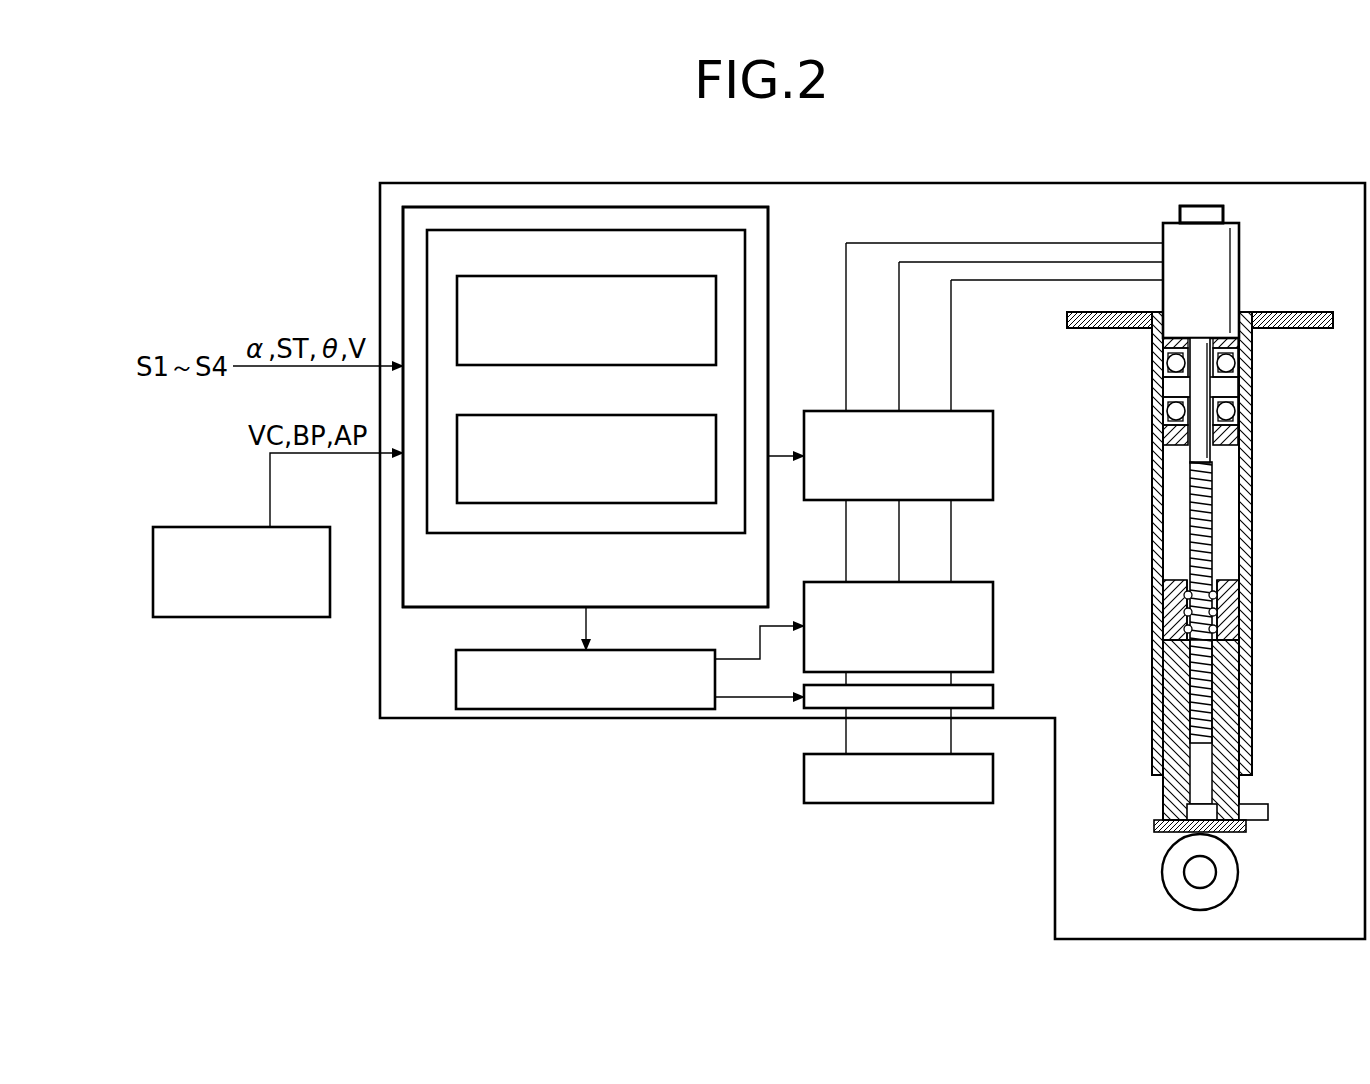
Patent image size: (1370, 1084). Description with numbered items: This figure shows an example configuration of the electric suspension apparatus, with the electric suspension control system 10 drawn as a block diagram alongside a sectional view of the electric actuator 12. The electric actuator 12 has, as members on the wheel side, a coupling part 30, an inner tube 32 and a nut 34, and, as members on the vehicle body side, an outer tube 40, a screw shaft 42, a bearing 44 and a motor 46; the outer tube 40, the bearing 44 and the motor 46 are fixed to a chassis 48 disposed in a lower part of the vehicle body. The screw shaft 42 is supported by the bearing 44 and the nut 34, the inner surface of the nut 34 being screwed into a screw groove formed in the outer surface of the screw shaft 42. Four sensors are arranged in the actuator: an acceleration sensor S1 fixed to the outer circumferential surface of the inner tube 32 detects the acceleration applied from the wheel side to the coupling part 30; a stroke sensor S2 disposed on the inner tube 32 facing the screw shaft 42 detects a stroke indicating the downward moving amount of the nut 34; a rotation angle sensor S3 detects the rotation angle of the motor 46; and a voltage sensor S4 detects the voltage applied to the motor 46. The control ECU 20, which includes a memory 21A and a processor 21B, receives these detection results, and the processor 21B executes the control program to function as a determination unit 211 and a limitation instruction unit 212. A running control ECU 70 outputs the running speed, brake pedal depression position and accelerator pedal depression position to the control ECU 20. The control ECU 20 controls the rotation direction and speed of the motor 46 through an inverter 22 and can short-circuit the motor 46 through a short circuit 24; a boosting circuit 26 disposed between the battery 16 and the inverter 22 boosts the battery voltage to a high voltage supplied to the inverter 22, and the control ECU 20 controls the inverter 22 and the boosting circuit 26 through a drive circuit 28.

The steering control device 10 is at (876, 183).
The electric actuator 12 is at (1278, 592).
The battery 16 is at (804, 768).
The control ECU 20 is at (403, 231).
The memory 21A is at (585, 407).
The processor 21B is at (427, 306).
The determination unit 211 is at (567, 276).
The limitation instruction unit 212 is at (567, 415).
The inverter 22 is at (975, 582).
The short circuit 24 is at (975, 411).
The boosting circuit 26 is at (993, 700).
The drive circuit 28 is at (456, 690).
The coupling part 30 is at (1226, 872).
The inner tube 32 is at (1170, 812).
The nut 34 is at (1170, 596).
The outer tube 40 is at (1252, 712).
The screw shaft 42 is at (1205, 690).
The bearing 44 is at (1226, 363).
The motor 46 is at (1240, 228).
The chassis 48 is at (1305, 312).
The running control ECU 70 is at (178, 527).
The acceleration sensor S1 is at (1254, 812).
The stroke sensor S2 is at (1200, 810).
The rotation angle sensor S3 is at (1195, 212).
The voltage sensor S4 is at (1201, 214).